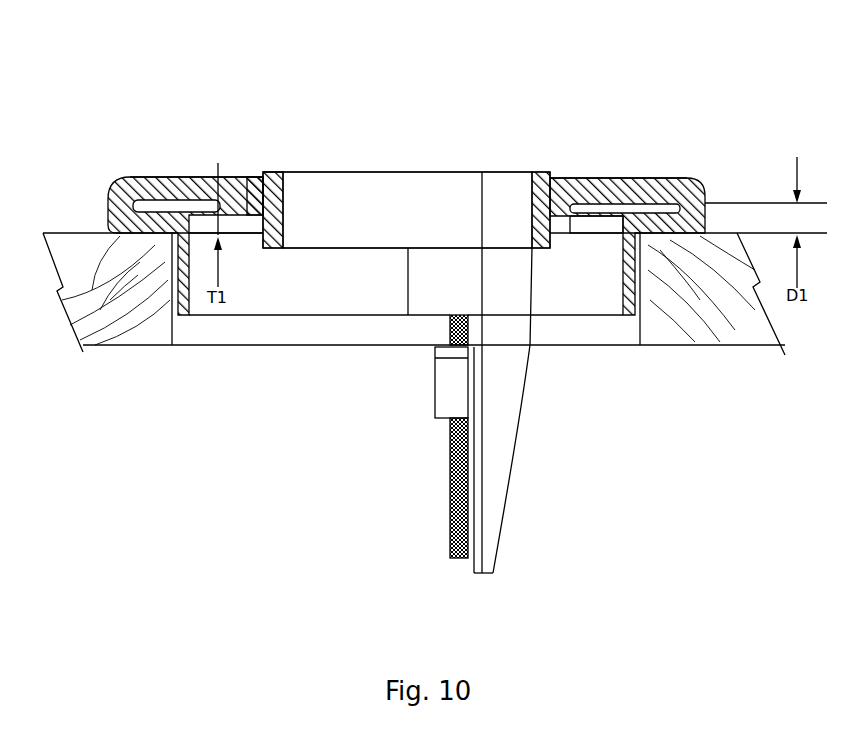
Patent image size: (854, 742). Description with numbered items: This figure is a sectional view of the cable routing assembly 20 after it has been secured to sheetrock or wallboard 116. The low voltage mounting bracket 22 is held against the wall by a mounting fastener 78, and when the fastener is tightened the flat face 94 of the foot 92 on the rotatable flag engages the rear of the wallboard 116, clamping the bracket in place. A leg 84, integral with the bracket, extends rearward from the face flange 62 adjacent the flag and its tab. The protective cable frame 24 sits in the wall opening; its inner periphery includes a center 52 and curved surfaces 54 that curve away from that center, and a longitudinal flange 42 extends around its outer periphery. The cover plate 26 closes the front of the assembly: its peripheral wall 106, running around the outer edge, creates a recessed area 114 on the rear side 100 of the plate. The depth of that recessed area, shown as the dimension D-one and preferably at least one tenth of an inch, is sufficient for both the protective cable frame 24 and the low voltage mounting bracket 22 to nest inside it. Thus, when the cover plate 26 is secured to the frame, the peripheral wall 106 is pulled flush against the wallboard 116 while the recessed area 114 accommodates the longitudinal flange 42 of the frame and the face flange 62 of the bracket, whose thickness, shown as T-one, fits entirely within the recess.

The cable routing assembly 20 is at (124, 142).
The low voltage mounting bracket 22 is at (613, 318).
The protective cable frame 24 is at (482, 172).
The cover plate 26 is at (628, 178).
The longitudinal flange 42 is at (258, 177).
The center 52 is at (283, 210).
The curved surfaces 54 is at (270, 176).
The face flange 62 is at (668, 178).
The mounting fastener 78 is at (450, 487).
The leg 84 is at (512, 465).
The foot 92 is at (435, 350).
The flat face 94 is at (442, 345).
The rear side 100 is at (608, 217).
The peripheral wall 106 is at (107, 207).
The recessed area 114 is at (196, 177).
The wallboard 116 is at (128, 347).